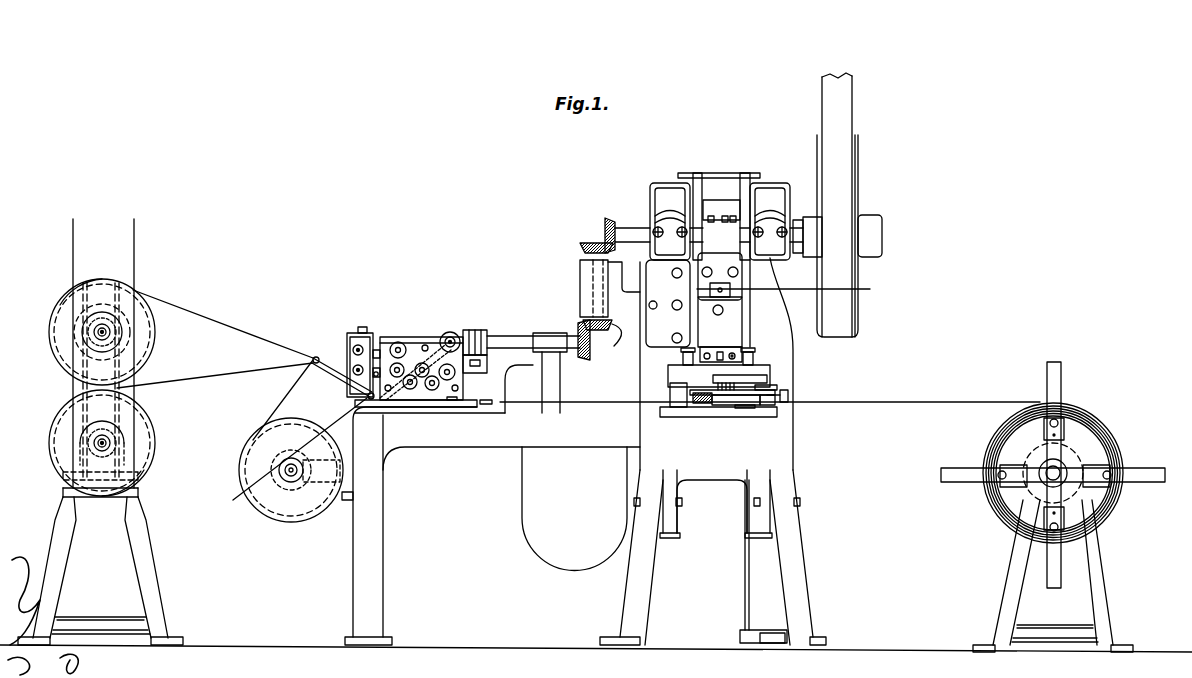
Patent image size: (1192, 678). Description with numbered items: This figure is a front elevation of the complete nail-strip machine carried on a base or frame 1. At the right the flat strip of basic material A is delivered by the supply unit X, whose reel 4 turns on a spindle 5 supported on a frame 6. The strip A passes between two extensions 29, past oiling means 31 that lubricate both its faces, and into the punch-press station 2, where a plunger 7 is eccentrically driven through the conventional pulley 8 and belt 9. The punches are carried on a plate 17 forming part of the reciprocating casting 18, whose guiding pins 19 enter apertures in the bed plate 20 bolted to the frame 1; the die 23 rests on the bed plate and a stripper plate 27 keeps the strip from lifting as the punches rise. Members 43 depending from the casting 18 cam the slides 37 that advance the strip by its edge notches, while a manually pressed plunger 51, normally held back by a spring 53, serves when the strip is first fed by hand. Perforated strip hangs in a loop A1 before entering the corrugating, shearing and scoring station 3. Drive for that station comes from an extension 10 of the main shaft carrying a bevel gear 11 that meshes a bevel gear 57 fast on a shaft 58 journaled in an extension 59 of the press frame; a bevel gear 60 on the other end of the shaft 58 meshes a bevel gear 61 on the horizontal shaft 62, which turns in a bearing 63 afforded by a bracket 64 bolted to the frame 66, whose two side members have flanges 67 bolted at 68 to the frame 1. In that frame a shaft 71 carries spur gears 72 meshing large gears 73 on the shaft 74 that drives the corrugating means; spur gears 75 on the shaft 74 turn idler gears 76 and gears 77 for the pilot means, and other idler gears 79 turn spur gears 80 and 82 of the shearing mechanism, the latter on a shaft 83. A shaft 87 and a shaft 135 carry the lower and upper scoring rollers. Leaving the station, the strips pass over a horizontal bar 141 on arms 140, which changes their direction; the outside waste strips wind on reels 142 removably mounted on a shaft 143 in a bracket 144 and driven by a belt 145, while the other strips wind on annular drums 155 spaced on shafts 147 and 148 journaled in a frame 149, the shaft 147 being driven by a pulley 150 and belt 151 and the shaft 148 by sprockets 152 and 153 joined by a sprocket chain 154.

The base or frame 1 is at (511, 429).
The perforating station 2 is at (806, 362).
The corrugating, shearing and scoring station 3 is at (405, 332).
The reel 4 is at (1000, 517).
The spindle 5 is at (1056, 470).
The frame 6 is at (1095, 572).
The plunger 7 is at (789, 288).
The driving pulley 8 is at (860, 182).
The belt 9 is at (850, 108).
The extension 10 is at (623, 228).
The bevel gear 11 is at (605, 222).
The plate 17 is at (770, 379).
The casting 18 is at (668, 369).
The guiding pins 19 is at (669, 394).
The bed plate 20 is at (742, 410).
The die 23 is at (727, 407).
The stripper plate 27 is at (733, 472).
The extensions 29 is at (775, 406).
The oiling means 31 is at (790, 395).
The slides 37 is at (697, 408).
The members 43 is at (690, 405).
The plunger 51 is at (746, 406).
The spring 53 is at (736, 633).
The bevel gear 57 is at (583, 248).
The shaft 58 is at (592, 268).
The extension 59 is at (582, 283).
The bevel gear 60 is at (659, 303).
The bevel gear 61 is at (596, 353).
The horizontal shaft 62 is at (515, 335).
The shaft bearing 63 is at (549, 357).
The bracket 64 is at (477, 330).
The frame 66 is at (416, 400).
The flanges 67 is at (468, 400).
The bolts 68 is at (462, 398).
The shaft 71 is at (452, 333).
The feed roll 72 is at (449, 340).
The large gears 73 is at (428, 398).
The shaft 74 is at (422, 365).
The spur gears 75 is at (422, 400).
The idler gears 76 is at (446, 400).
The gears 77 is at (458, 382).
The idler gears 79 is at (405, 390).
The spur gears 80 is at (396, 346).
The spur gears 82 is at (395, 365).
The shaft 83 is at (354, 340).
The shaft 87 is at (340, 375).
The shaft 135 is at (356, 348).
The arms 140 is at (310, 362).
The horizontal bar 141 is at (313, 358).
The reels 142 is at (283, 512).
The shaft 143 is at (293, 462).
The bracket 144 is at (348, 501).
The belt 145 is at (350, 447).
The shaft 147 is at (104, 333).
The shaft 148 is at (104, 444).
The frame 149 is at (143, 562).
The pulley 150 is at (128, 298).
The belt 151 is at (134, 237).
The sprocket 152 is at (80, 368).
The sprocket 153 is at (70, 453).
The sprocket chain 154 is at (136, 385).
The annular drums 155 is at (60, 307).
The flat strip of basic material A is at (770, 424).
The loop A1 is at (549, 570).
The supply unit X is at (1040, 400).